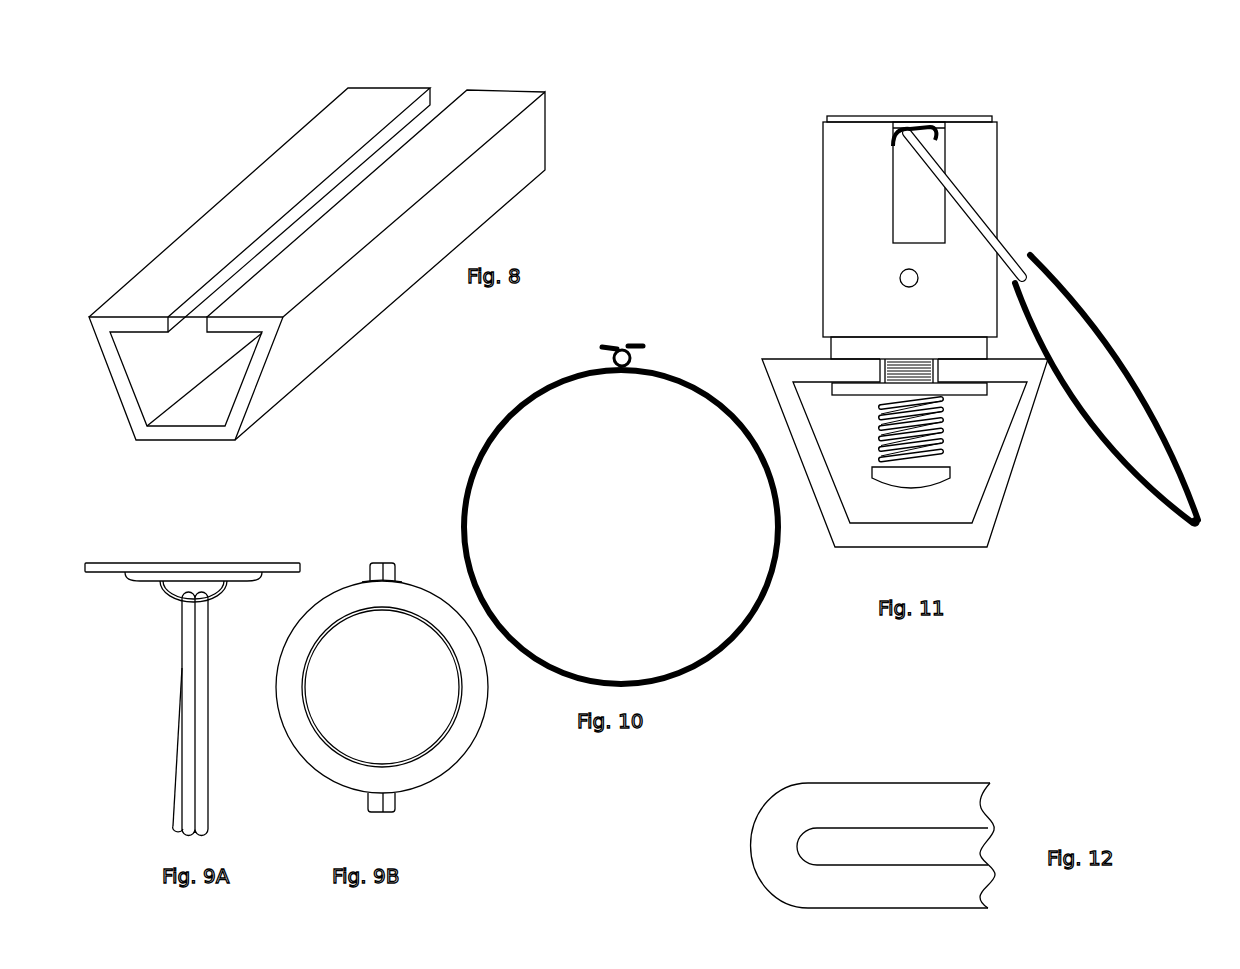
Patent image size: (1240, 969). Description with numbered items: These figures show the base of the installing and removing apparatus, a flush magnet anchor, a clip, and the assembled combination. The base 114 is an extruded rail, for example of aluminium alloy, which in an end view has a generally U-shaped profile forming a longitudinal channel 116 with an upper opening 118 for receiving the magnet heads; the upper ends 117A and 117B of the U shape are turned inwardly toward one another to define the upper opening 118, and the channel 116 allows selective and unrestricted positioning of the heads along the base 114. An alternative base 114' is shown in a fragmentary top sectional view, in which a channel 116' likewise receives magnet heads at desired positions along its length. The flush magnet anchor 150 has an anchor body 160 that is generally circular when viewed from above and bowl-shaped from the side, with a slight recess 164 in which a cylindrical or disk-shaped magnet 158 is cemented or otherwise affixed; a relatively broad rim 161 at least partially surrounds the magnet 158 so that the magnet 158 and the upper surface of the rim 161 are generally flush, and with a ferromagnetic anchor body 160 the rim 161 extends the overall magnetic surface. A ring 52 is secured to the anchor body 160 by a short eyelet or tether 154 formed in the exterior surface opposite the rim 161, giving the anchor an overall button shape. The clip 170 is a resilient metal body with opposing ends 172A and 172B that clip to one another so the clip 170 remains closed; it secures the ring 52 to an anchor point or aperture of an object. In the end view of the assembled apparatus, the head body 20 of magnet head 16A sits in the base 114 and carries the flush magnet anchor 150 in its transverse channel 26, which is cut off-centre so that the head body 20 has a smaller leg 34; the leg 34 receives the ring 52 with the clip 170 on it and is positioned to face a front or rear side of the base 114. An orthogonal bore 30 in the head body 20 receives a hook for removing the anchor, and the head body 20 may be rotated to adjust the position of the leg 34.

In FIG. 8, the base 114 is at (317, 266).
In FIG. 11, the base 114 is at (905, 453).
In FIG. 12, the base 114' is at (873, 845).
In FIG. 8, the longitudinal channel 116 is at (204, 405).
In FIG. 12, the channel 116' is at (892, 846).
In FIG. 8, the upper end 117A is at (294, 196).
In FIG. 8, the upper end 117B is at (413, 200).
In FIG. 8, the upper opening 118 is at (271, 241).
In FIG. 10, the upper opening 118 is at (371, 496).
In FIG. 9A, the flush magnet anchor 150 is at (129, 605).
In FIG. 9B, the flush magnet anchor 150 is at (471, 778).
In FIG. 11, the flush magnet anchor 150 is at (910, 116).
In FIG. 9A, the tether 154 is at (222, 598).
In FIG. 9B, the magnet 158 is at (400, 706).
In FIG. 9B, the anchor body 160 is at (362, 582).
In FIG. 9B, the rim 161 is at (400, 791).
In FIG. 9A, the recess 164 is at (262, 574).
In FIG. 9A, the ring 52 is at (209, 794).
In FIG. 9B, the ring 52 is at (395, 568).
In FIG. 11, the ring 52 is at (1008, 236).
In FIG. 10, the clip 170 is at (731, 628).
In FIG. 11, the clip 170 is at (1090, 329).
In FIG. 10, the end 172A is at (602, 347).
In FIG. 10, the end 172B is at (644, 346).
In FIG. 11, the magnet head 16A is at (808, 274).
In FIG. 11, the head body 20 is at (866, 298).
In FIG. 11, the transverse channel 26 is at (923, 240).
In FIG. 11, the orthogonal bore 30 is at (917, 282).
In FIG. 11, the leg 34 is at (989, 165).